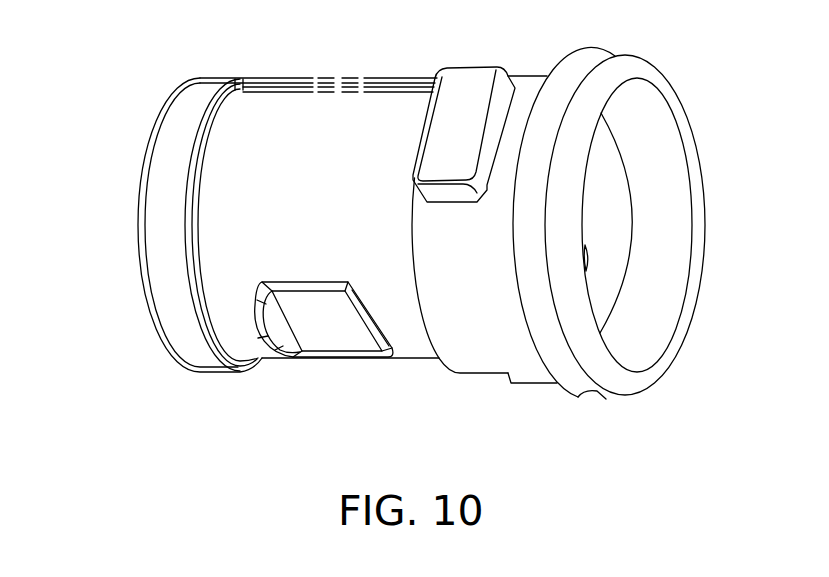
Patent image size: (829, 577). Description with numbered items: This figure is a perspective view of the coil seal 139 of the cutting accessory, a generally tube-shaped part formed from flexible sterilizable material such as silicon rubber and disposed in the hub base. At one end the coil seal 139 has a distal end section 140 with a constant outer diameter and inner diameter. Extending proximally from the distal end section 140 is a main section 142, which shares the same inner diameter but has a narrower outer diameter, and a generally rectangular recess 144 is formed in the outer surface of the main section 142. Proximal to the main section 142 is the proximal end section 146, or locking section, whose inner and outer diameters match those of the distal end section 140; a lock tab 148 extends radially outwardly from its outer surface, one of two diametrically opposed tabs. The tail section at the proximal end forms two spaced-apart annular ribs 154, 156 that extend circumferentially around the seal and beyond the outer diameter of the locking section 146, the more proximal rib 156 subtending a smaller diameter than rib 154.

The coil seal 139 is at (135, 56).
The distal end section 140 is at (188, 343).
The main section 142 is at (326, 174).
The rectangular recess 144 is at (297, 360).
The proximal end section 146 is at (493, 277).
The lock tab 148 is at (470, 90).
The rib 154 is at (604, 406).
The rib 156 is at (667, 363).